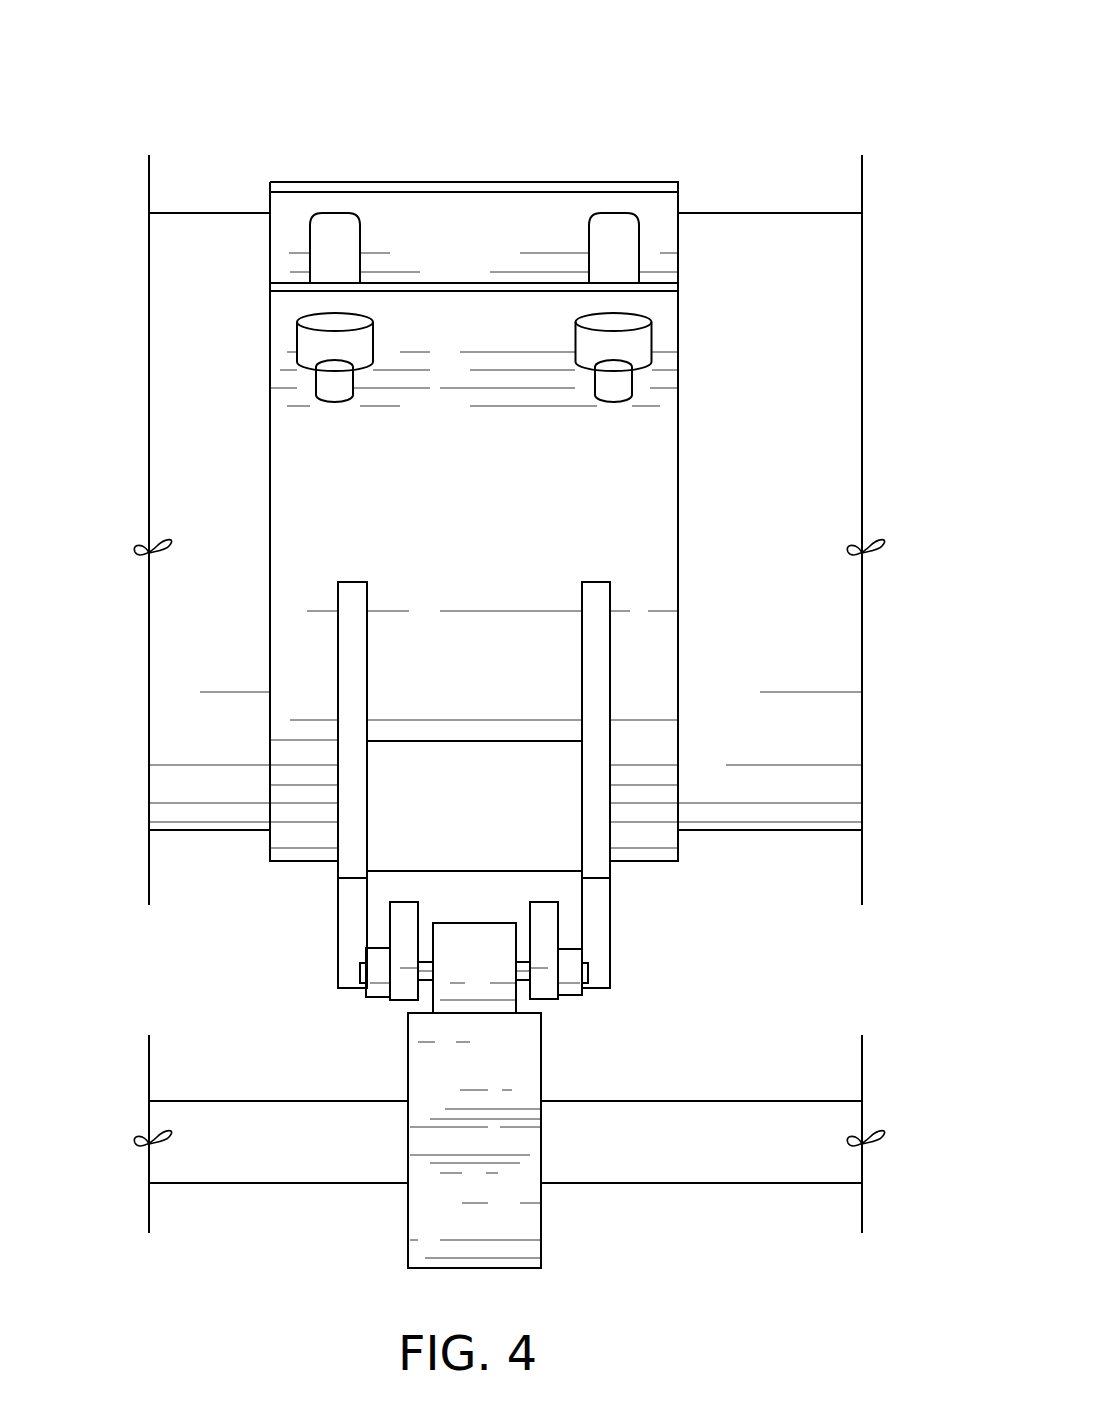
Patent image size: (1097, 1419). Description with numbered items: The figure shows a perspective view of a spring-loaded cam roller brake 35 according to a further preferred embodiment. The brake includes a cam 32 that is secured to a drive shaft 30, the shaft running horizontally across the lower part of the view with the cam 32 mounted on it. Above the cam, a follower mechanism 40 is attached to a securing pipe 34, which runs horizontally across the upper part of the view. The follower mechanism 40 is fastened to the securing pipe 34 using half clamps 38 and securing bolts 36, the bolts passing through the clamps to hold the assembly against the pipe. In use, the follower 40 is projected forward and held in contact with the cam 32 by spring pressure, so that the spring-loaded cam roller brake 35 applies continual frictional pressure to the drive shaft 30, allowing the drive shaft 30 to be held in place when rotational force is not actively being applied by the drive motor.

The drive shaft 30 is at (327, 1152).
The cam 32 is at (435, 1079).
The securing pipe 34 is at (220, 473).
The spring-loaded cam roller brake 35 is at (592, 140).
The securing bolts 36 is at (610, 240).
The half clamps 38 is at (470, 235).
The follower mechanism 40 is at (488, 959).